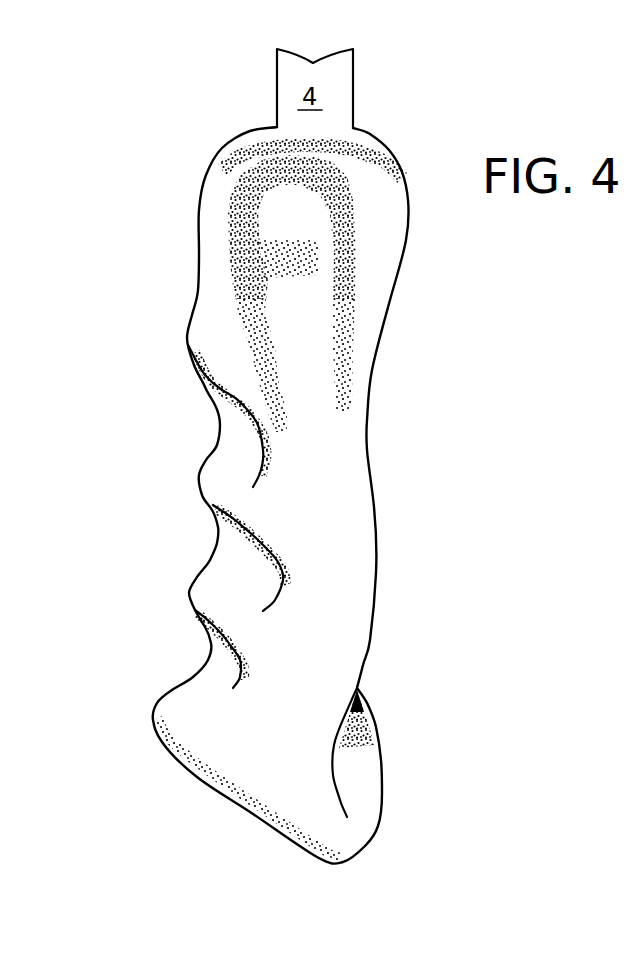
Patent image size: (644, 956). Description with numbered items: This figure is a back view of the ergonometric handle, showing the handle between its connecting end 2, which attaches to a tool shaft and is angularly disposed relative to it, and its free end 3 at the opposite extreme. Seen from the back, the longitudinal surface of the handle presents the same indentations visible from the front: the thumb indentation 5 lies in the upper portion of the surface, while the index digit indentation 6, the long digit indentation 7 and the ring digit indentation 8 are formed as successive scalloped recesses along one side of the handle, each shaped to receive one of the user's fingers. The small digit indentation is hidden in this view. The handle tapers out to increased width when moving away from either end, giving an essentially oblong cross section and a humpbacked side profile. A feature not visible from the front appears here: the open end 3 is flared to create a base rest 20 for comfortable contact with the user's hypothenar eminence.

The connecting end 2 is at (385, 146).
The free end 3 is at (200, 803).
The thumb indentation 5 is at (311, 313).
The index digit indentation 6 is at (190, 421).
The long digit indentation 7 is at (186, 546).
The ring digit indentation 8 is at (178, 651).
The base rest 20 is at (363, 790).